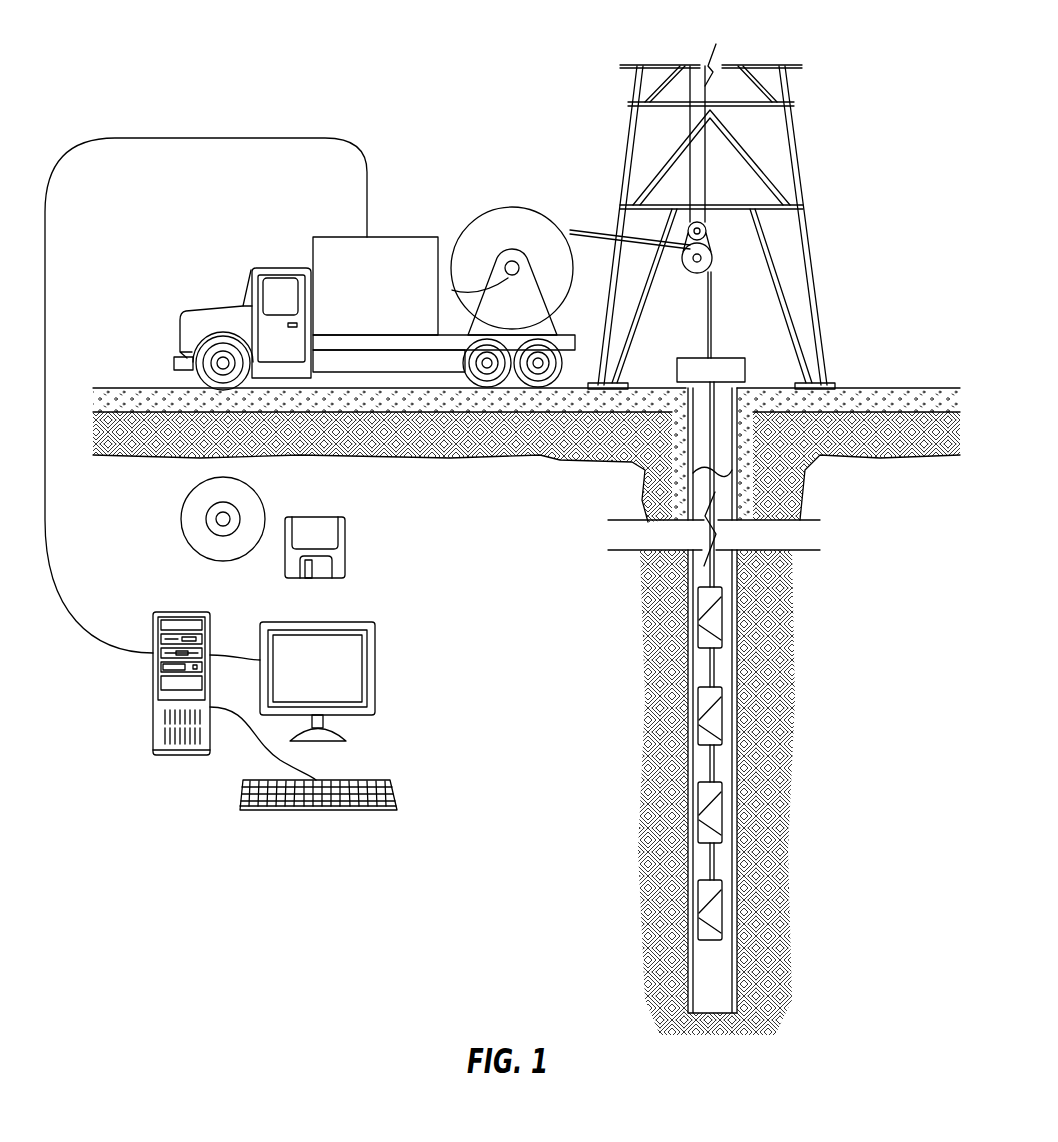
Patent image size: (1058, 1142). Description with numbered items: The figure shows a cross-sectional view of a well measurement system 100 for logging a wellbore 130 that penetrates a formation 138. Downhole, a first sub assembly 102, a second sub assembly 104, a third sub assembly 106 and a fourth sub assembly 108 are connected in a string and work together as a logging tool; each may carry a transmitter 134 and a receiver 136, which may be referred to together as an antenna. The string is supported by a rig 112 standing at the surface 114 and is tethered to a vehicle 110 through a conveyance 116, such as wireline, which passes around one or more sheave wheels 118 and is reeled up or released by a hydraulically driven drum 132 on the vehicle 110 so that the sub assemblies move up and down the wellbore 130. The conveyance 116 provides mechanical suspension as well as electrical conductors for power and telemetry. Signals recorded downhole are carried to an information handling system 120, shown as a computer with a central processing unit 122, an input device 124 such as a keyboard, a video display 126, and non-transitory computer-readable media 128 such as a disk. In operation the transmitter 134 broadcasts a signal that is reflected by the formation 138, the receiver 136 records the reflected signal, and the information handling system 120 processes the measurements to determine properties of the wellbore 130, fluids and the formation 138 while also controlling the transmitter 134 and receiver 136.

The well measurement system 100 is at (174, 57).
The first sub assembly 102 is at (700, 906).
The second sub assembly 104 is at (725, 813).
The third sub assembly 106 is at (698, 706).
The fourth sub assembly 108 is at (725, 617).
The vehicle 110 is at (388, 237).
The rig 112 is at (811, 222).
The surface 114 is at (873, 388).
The conveyance 116 is at (700, 566).
The sheave wheels 118 is at (697, 275).
The information handling system 120 is at (173, 845).
The central processing unit 122 is at (183, 612).
The input device 124 is at (400, 791).
The video display 126 is at (318, 622).
The non-transitory computer-readable media 128 is at (250, 486).
The wellbore 130 is at (812, 498).
The drum 132 is at (512, 207).
The transmitter 134 is at (718, 604).
The receiver 136 is at (718, 629).
The formation 138 is at (908, 633).